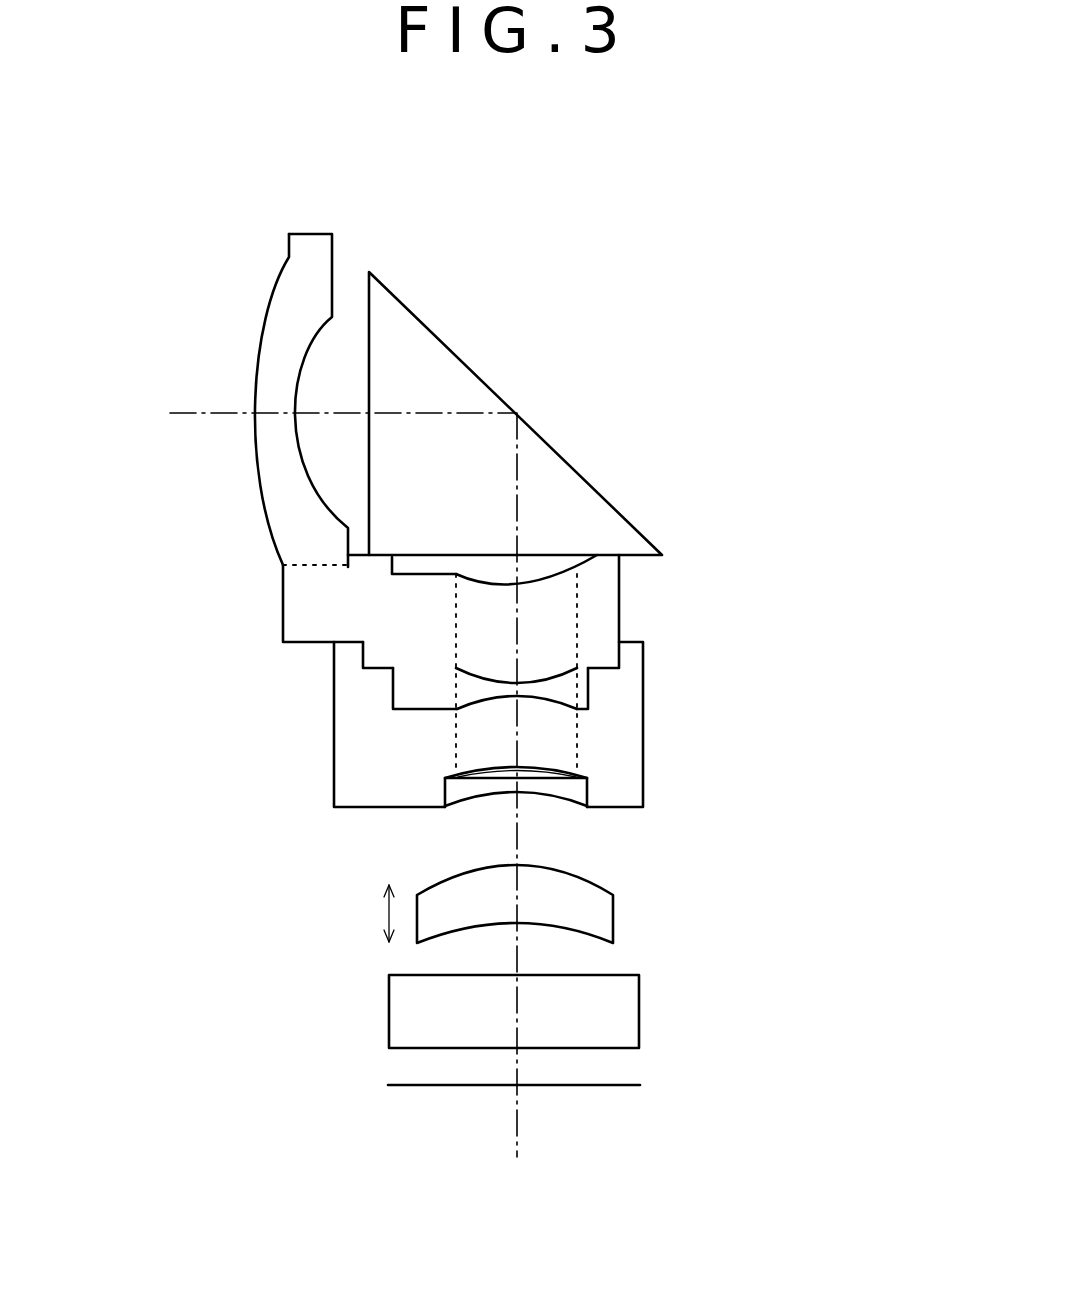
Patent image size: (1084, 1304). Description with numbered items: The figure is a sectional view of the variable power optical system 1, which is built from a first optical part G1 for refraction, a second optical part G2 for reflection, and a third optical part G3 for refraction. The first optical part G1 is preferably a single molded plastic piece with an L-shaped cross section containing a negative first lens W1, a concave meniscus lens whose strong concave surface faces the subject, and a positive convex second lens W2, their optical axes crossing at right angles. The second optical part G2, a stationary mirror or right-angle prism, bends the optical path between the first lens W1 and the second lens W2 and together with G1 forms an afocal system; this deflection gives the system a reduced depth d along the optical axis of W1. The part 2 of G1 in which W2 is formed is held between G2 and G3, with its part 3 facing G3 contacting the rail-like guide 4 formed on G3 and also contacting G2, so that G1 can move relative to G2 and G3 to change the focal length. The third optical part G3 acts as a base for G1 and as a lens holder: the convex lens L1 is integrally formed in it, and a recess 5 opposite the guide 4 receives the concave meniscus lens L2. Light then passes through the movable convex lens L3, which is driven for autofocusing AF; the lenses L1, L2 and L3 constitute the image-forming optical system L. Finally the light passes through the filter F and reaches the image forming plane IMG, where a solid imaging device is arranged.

The variable power optical system 1 is at (150, 297).
The depth d is at (662, 555).
The first optical part G1 is at (283, 592).
The first lens W1 is at (266, 466).
The second lens W2 is at (557, 613).
The part of G1 2 is at (603, 613).
The part facing G3 3 is at (603, 658).
The rail-like guide 4 is at (388, 667).
The recess 5 is at (585, 790).
The second optical part G2 is at (540, 455).
The third optical part G3 is at (633, 745).
The convex lens L1 is at (457, 745).
The concave meniscus lens L2 is at (475, 798).
The movable convex lens L3 is at (613, 912).
The image-forming optical system L is at (297, 945).
The autofocusing AF is at (367, 913).
The filter F is at (639, 1010).
The image forming plane IMG is at (607, 1088).